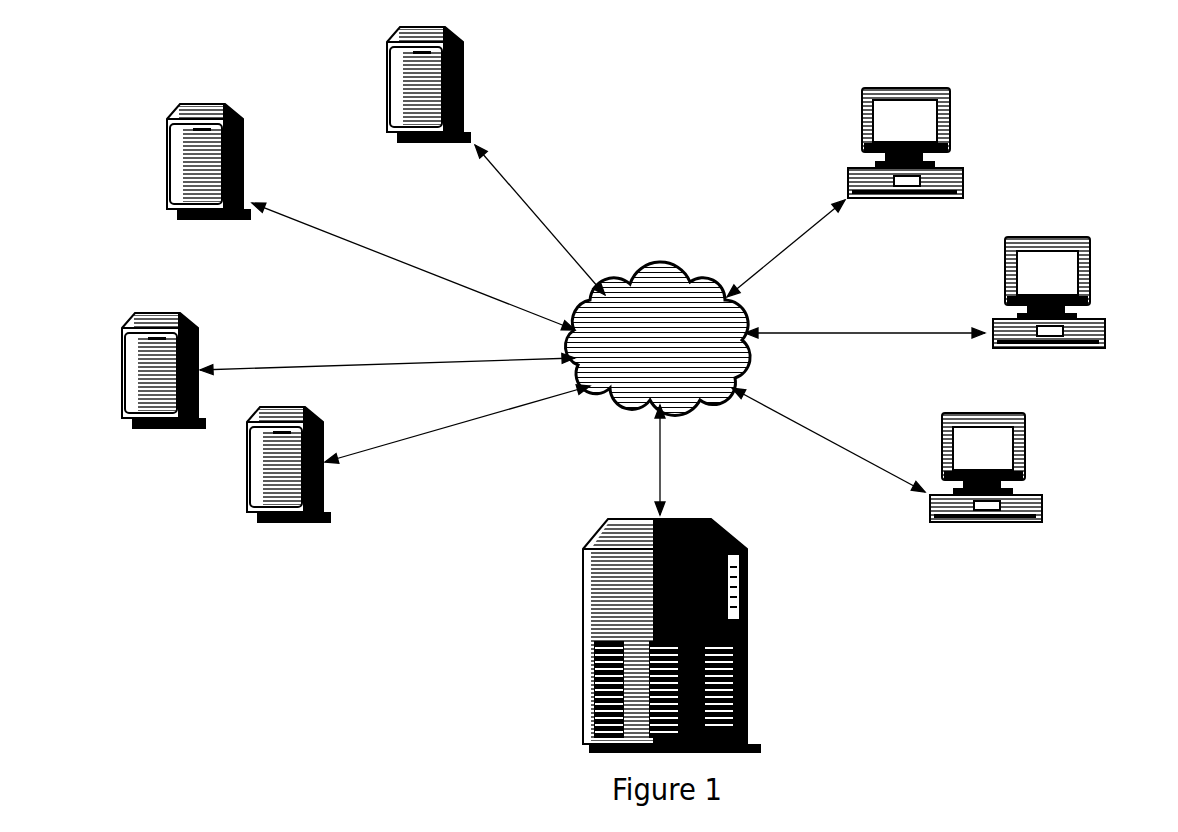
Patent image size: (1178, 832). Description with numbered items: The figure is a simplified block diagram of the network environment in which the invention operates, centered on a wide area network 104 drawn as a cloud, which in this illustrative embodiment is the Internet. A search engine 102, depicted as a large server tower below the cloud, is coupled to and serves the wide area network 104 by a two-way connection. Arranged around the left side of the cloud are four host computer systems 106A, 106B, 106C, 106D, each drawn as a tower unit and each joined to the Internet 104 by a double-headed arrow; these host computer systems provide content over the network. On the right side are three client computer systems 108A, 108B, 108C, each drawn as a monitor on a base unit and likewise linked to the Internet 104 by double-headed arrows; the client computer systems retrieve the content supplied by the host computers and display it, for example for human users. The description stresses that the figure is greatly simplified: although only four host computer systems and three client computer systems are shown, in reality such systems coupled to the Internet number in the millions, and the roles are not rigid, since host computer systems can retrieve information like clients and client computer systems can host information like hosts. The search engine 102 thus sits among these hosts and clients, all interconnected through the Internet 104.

The search engine 102 is at (773, 637).
The wide area network 104 is at (657, 338).
The host computer system 106A is at (387, 92).
The host computer system 106B is at (167, 165).
The host computer system 106C is at (122, 373).
The host computer system 106D is at (247, 470).
The client computer system 108A is at (905, 197).
The client computer system 108B is at (1048, 347).
The client computer system 108C is at (985, 522).